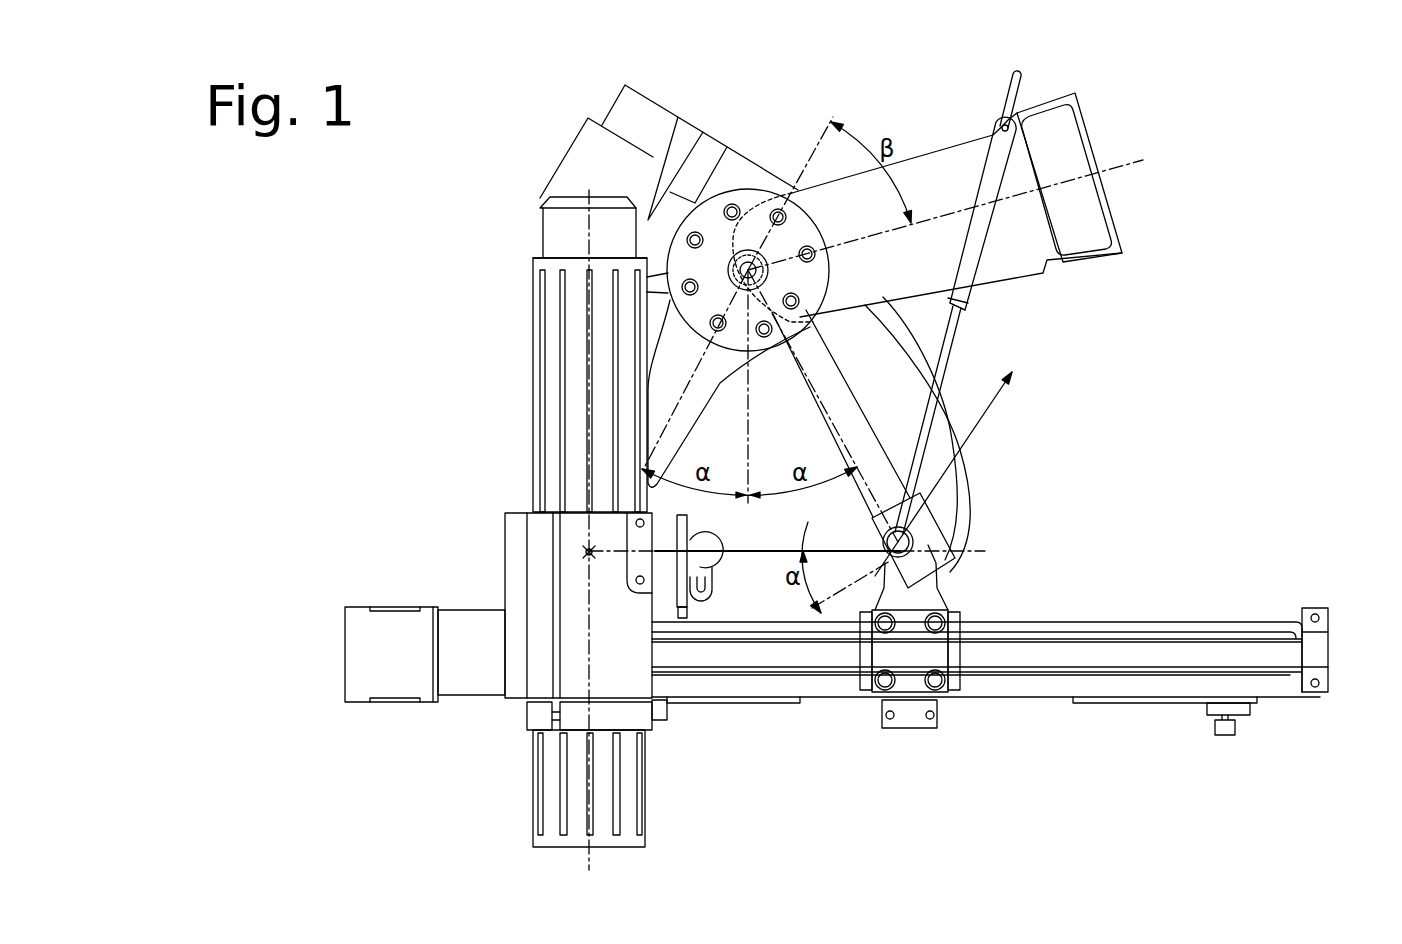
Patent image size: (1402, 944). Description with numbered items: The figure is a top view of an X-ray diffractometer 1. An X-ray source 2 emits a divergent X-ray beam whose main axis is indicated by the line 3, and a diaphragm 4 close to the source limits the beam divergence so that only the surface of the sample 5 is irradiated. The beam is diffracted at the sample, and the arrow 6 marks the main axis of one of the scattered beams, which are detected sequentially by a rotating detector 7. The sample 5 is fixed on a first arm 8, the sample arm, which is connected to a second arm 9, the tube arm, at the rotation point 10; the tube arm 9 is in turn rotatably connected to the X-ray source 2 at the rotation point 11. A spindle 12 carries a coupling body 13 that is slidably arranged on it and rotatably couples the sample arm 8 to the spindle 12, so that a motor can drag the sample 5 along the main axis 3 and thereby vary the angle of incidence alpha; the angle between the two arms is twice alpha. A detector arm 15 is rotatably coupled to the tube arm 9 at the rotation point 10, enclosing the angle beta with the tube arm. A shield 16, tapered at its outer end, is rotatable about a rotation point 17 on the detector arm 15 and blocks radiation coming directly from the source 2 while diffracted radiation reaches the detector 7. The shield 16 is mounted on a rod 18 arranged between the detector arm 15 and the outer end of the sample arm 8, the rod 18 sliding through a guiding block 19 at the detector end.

The X-ray diffractometer 1 is at (390, 307).
The X-ray source 2 is at (582, 632).
The main axis 3 is at (765, 550).
The diaphragm 4 is at (708, 563).
The sample 5 is at (950, 570).
The arrow 6 is at (985, 417).
The detector 7 is at (1075, 210).
The first arm 8 is at (832, 392).
The second arm 9 is at (688, 393).
The rotation point 10 is at (750, 250).
The rotation point 11 is at (589, 552).
The spindle 12 is at (1147, 650).
The coupling body 13 is at (925, 657).
The detector arm 15 is at (928, 178).
The shield 16 is at (968, 285).
The rotation point 17 is at (1023, 105).
The rod 18 is at (960, 350).
The guiding block 19 is at (948, 285).